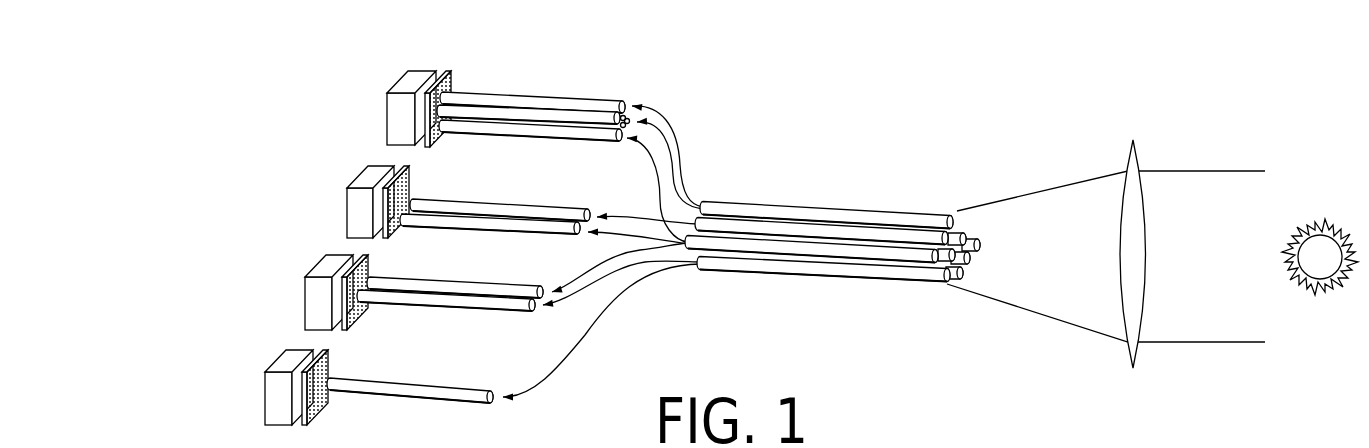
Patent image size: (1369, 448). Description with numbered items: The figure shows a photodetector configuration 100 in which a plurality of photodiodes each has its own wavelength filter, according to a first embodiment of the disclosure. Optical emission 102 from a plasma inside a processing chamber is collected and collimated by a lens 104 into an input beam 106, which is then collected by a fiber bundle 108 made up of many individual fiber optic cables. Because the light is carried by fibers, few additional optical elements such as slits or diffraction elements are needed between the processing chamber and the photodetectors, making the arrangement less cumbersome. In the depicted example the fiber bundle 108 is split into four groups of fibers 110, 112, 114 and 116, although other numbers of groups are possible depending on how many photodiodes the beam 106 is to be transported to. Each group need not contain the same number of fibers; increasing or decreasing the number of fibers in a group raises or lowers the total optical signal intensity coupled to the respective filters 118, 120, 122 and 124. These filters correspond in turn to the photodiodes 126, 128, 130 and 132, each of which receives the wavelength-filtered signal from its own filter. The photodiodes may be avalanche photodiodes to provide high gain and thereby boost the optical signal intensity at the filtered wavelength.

The photodetector configuration 100 is at (848, 71).
The optical emission 102 is at (1325, 224).
The lens 104 is at (1127, 158).
The input beam 106 is at (1043, 290).
The fiber bundle 108 is at (841, 191).
The first fiber group 110 is at (574, 82).
The second fiber group 112 is at (521, 191).
The third fiber group 114 is at (478, 272).
The fourth fiber group 116 is at (464, 369).
The first filter 118 is at (453, 83).
The second filter 120 is at (417, 183).
The third filter 122 is at (373, 270).
The fourth filter 124 is at (333, 358).
The first photodiode 126 is at (396, 88).
The second photodiode 128 is at (360, 178).
The third photodiode 130 is at (318, 267).
The fourth photodiode 132 is at (273, 360).